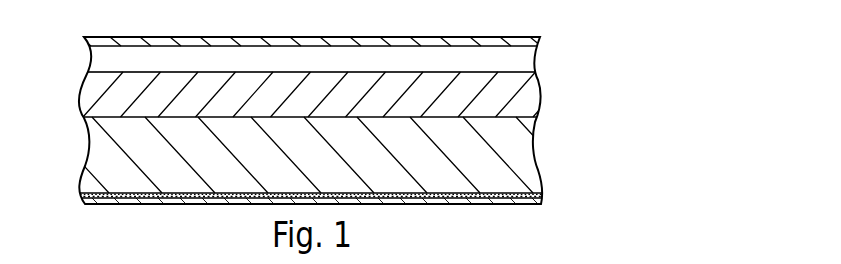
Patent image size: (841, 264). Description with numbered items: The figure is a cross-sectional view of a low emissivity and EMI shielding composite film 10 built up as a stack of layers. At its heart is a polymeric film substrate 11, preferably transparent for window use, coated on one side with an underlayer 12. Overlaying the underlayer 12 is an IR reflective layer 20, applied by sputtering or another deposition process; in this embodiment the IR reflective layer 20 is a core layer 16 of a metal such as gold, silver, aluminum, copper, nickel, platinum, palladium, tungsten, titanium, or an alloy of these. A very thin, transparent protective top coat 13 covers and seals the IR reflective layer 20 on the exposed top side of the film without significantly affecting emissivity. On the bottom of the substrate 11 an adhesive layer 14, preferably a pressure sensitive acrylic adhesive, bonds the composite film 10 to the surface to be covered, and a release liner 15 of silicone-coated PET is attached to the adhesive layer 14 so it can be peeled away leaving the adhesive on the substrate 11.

The composite film 10 is at (662, 33).
The polymeric film substrate 11 is at (521, 156).
The underlayer 12 is at (527, 100).
The protective top coat 13 is at (540, 40).
The adhesive layer 14 is at (83, 194).
The release liner 15 is at (86, 203).
The core layer 16 is at (517, 66).
The IR reflective layer 20 is at (65, 47).